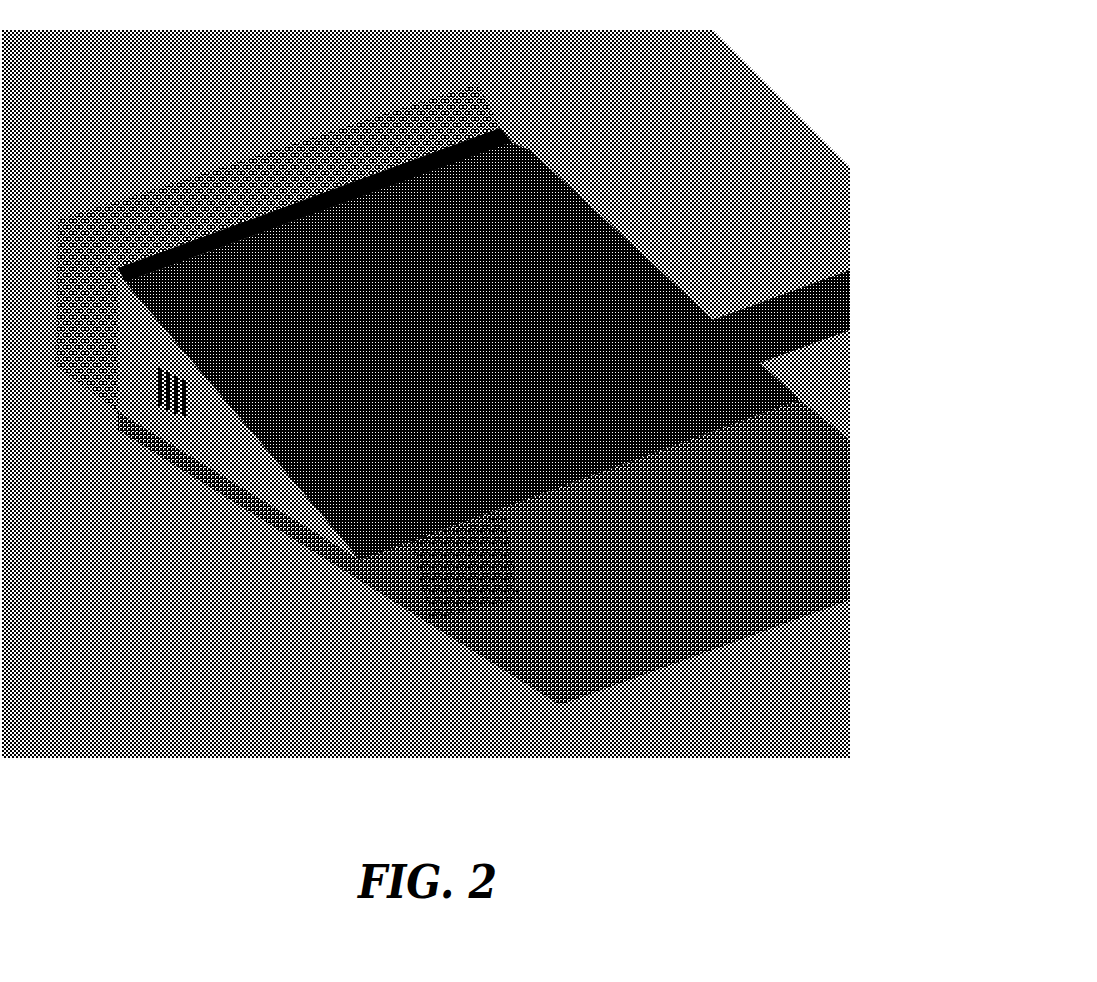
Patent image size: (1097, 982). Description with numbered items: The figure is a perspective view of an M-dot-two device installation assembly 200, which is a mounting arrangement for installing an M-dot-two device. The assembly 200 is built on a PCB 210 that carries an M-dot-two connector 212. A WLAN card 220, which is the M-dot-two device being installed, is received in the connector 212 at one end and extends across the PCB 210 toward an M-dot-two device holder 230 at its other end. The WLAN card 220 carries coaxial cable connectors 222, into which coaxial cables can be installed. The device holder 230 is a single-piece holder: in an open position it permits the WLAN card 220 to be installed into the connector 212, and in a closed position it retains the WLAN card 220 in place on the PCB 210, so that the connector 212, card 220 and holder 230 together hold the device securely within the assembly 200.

The M.2 device installation assembly 200 is at (448, 422).
The PCB 210 is at (743, 63).
The M.2 connector 212 is at (180, 176).
The WLAN card 220 is at (257, 457).
The coaxial cable connectors 222 is at (500, 525).
The M.2 device holder 230 is at (812, 526).